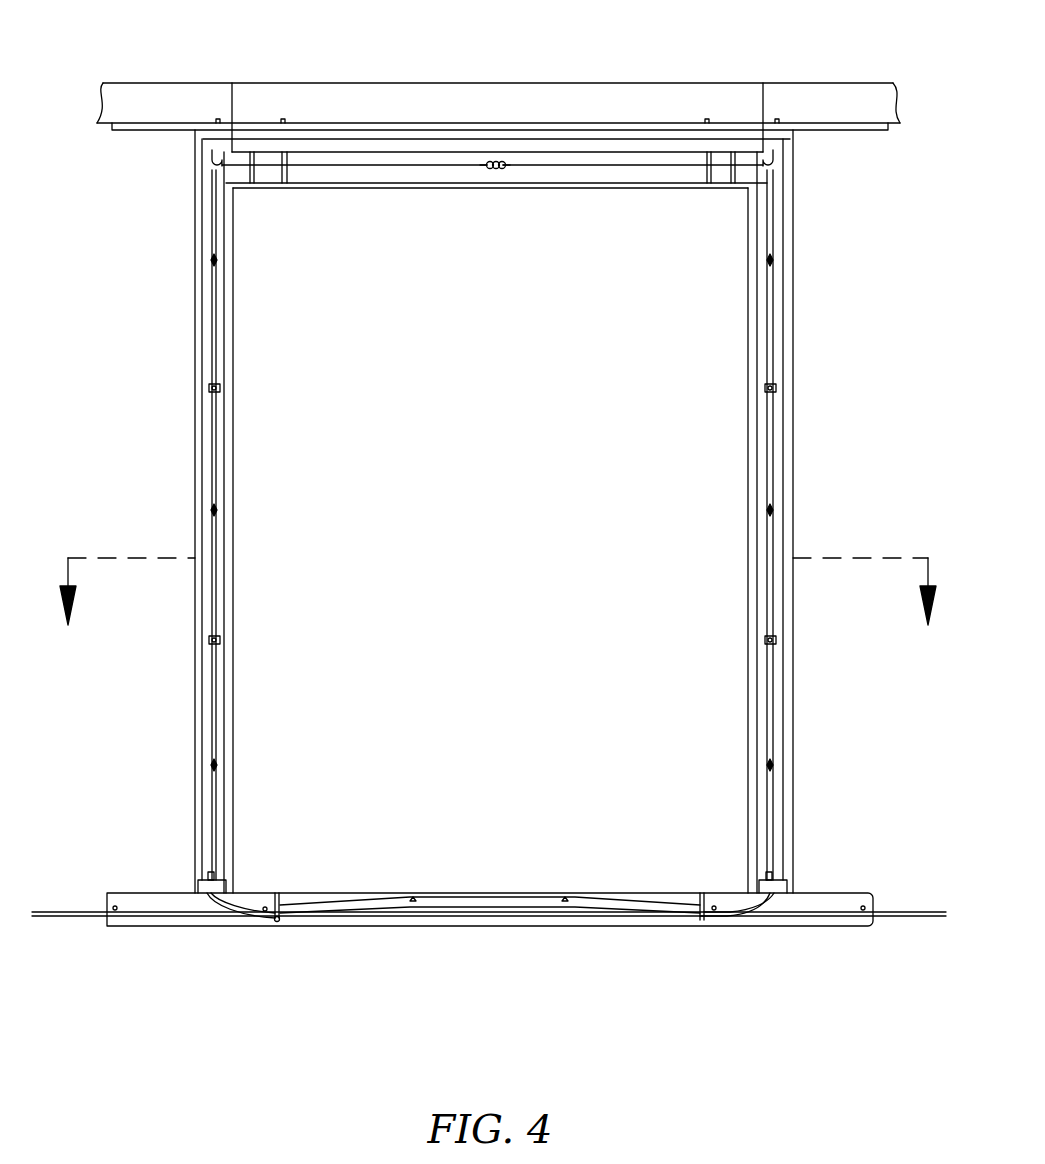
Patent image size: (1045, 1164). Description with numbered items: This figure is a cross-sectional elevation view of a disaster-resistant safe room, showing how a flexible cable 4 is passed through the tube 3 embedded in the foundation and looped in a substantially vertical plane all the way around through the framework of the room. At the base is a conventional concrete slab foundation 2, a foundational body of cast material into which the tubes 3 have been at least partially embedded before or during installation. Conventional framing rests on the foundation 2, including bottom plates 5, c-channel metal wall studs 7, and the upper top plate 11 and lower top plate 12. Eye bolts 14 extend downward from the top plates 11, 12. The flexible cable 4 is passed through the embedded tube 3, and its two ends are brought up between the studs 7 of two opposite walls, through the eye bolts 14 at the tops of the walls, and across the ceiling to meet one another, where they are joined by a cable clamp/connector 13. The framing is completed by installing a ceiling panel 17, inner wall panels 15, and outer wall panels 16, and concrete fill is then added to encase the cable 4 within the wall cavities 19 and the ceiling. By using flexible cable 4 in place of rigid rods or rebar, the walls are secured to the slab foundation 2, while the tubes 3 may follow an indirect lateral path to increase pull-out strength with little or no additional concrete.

The concrete slab foundation 2 is at (131, 898).
The embedded tubes 3 is at (210, 873).
The flexible cable 4 is at (352, 170).
The bottom plate 5 is at (181, 960).
The c-channel metal wall stud 7 is at (395, 178).
The upper top plate 11 is at (332, 156).
The lower top plate 12 is at (308, 143).
The cable clamp/connector 13 is at (485, 164).
The eye bolt 14 is at (218, 123).
The inner wall panel 15 is at (231, 459).
The outer wall panel 16 is at (200, 416).
The ceiling panel 17 is at (552, 186).
The wall cavities 19 is at (372, 172).